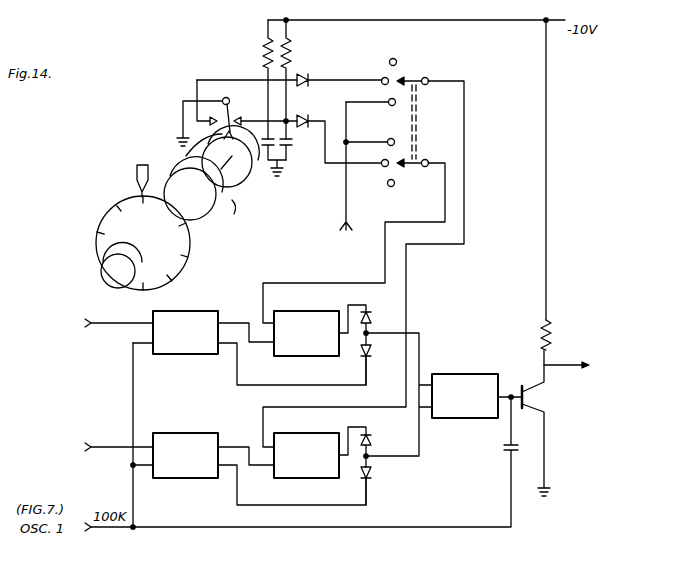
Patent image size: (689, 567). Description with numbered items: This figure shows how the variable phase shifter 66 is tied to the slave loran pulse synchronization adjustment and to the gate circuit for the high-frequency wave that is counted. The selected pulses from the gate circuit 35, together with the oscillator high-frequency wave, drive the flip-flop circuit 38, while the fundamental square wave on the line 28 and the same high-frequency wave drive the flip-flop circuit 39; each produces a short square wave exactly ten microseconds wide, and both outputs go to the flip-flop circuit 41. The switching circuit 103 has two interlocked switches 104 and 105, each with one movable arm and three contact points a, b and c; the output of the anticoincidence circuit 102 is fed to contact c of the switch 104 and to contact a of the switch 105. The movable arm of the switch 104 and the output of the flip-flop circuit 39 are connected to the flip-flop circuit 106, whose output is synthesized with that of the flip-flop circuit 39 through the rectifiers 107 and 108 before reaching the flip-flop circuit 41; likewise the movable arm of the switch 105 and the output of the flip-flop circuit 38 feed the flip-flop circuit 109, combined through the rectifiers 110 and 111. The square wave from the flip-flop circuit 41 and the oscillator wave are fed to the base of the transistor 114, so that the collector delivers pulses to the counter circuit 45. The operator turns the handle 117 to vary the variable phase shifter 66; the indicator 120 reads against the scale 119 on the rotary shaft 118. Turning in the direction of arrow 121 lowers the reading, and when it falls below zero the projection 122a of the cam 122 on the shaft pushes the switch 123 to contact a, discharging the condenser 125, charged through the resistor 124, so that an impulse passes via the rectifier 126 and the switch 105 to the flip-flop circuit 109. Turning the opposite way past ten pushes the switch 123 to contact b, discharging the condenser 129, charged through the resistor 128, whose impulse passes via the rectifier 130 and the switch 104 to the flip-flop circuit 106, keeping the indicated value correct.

The resistor 128 is at (262, 50).
The resistor 124 is at (290, 58).
The rectifier 130 is at (308, 76).
The switch 123 is at (234, 96).
The rectifier 126 is at (314, 118).
The condenser 125 is at (290, 142).
The condenser 129 is at (270, 150).
The switch 104 is at (406, 72).
The switch 105 is at (409, 178).
The switching circuit 103 is at (446, 125).
The anticoincidence circuit 102 is at (360, 177).
The arrow 121 is at (110, 196).
The indicator 120 is at (137, 172).
The handle 117 is at (106, 275).
The scale 119 is at (98, 242).
The rotary shaft 118 is at (207, 218).
The cam 122 is at (238, 178).
The projection 122a is at (186, 153).
The variable phase shifter 66 is at (243, 213).
The flip-flop circuit 38 is at (207, 308).
The flip-flop circuit 109 is at (314, 310).
The rectifier 111 is at (372, 316).
The rectifier 110 is at (372, 352).
The flip-flop circuit 39 is at (199, 430).
The flip-flop circuit 106 is at (314, 433).
The rectifier 108 is at (372, 440).
The rectifier 107 is at (374, 472).
The flip-flop circuit 41 is at (474, 358).
The transistor 114 is at (514, 384).
The counter circuit 45 is at (592, 359).
The gate circuit 35 is at (84, 331).
The line 28 is at (86, 446).